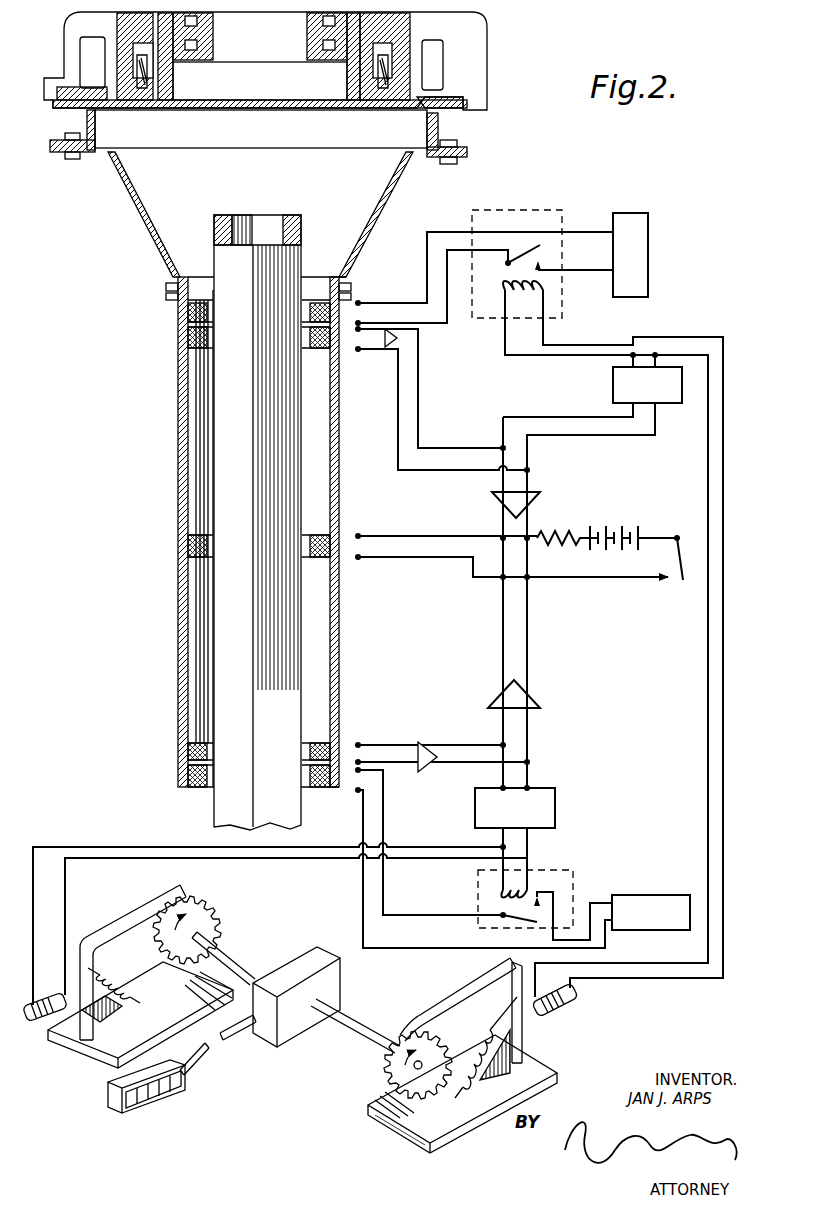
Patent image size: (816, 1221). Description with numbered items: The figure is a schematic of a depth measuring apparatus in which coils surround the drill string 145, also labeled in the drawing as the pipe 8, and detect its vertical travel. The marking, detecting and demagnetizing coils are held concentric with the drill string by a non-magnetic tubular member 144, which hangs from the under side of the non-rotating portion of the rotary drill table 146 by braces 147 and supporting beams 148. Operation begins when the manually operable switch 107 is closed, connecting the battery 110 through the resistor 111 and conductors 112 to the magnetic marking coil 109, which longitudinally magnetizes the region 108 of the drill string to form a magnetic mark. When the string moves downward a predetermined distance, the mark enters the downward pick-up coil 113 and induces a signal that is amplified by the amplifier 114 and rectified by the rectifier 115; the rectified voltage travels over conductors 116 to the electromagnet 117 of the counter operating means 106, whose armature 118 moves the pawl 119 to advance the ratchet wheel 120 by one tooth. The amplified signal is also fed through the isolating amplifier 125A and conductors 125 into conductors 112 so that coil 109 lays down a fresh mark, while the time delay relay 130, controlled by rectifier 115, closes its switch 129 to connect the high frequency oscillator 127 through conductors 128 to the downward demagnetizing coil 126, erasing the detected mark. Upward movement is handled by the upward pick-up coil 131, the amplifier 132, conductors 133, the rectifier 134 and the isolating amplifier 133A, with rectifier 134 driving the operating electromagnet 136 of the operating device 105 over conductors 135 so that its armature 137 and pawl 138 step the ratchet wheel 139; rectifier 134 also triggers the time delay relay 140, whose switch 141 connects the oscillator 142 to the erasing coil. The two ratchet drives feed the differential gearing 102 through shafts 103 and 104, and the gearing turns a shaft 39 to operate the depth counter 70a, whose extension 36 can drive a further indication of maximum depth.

The rotary drill table 146 is at (265, 61).
The supporting beams 148 is at (95, 128).
The braces 147 is at (140, 212).
The drill pipe / shaft 8 is at (266, 232).
The non-magnetic tubular member 144 is at (332, 666).
The drill string 145 is at (188, 312).
The upward pick-up coil 131 is at (188, 338).
The amplifier 132 is at (397, 346).
The region of longitudinal magnetization 108 is at (243, 548).
The magnetic marking coil 109 is at (188, 546).
The downward pick-up coil 113 is at (188, 752).
The downward demagnetizing coil 126 is at (188, 776).
The switch of time delay relay 141 is at (545, 250).
The oscillator 142 is at (648, 240).
The time delay relay 140 is at (555, 307).
The rectifier 134 is at (613, 381).
The conductors 133 is at (572, 422).
The conductors 135 is at (724, 433).
The isolating amplifier 133A is at (492, 500).
The resistor 111 is at (562, 530).
The battery 110 is at (622, 528).
The conductors 112 is at (410, 556).
The manually operable switch 107 is at (682, 584).
The conductors 125 is at (527, 633).
The isolating amplifier 125A is at (520, 700).
The amplifier 114 is at (430, 745).
The rectifier 115 is at (555, 800).
The conductors 116 is at (427, 847).
The conductors 128 is at (383, 887).
The time delay relay 130 is at (530, 882).
The switch of time delay relay 129 is at (503, 912).
The high frequency oscillator 127 is at (655, 897).
The electromagnet 117 is at (45, 1014).
The armature 118 is at (80, 1032).
The pawl 119 is at (125, 925).
The ratchet wheel 120 is at (205, 905).
The shaft 104 is at (237, 962).
The differential gearing 102 is at (330, 983).
The electromagnetic operating device 106 is at (90, 1068).
The shaft 39 is at (238, 1048).
The extension of shaft 36 is at (195, 1062).
The depth counter 70a is at (143, 1106).
The shaft 103 is at (347, 1035).
The ratchet wheel 139 is at (395, 1081).
The electromagnetic operating device 105 is at (410, 1138).
The armature 137 is at (522, 1035).
The pawl 138 is at (458, 991).
The operating electromagnet 136 is at (577, 997).